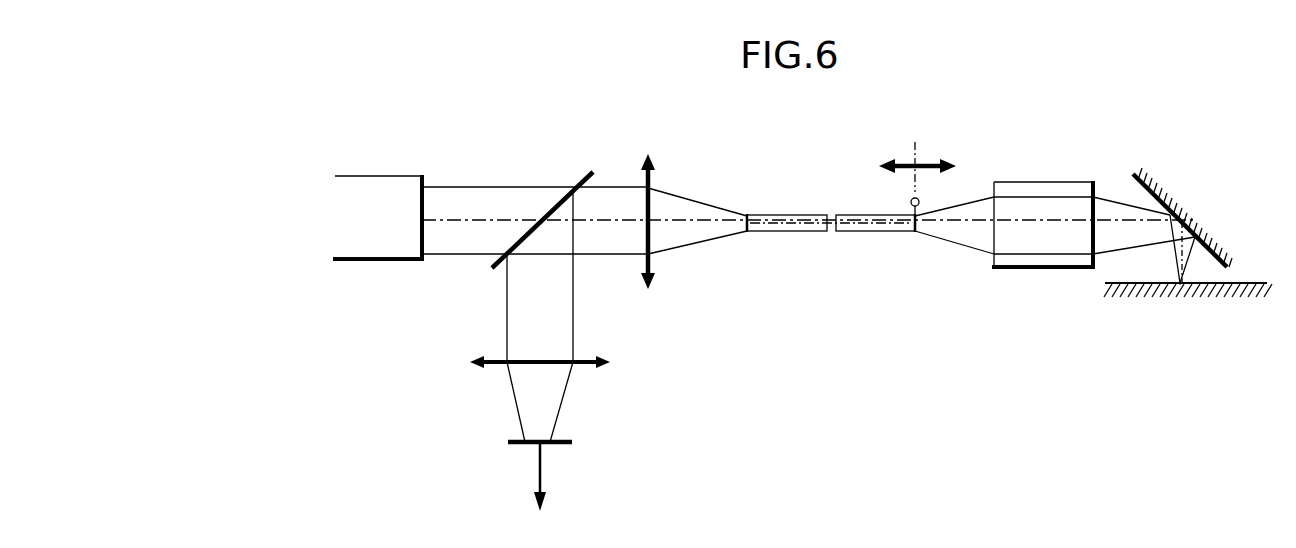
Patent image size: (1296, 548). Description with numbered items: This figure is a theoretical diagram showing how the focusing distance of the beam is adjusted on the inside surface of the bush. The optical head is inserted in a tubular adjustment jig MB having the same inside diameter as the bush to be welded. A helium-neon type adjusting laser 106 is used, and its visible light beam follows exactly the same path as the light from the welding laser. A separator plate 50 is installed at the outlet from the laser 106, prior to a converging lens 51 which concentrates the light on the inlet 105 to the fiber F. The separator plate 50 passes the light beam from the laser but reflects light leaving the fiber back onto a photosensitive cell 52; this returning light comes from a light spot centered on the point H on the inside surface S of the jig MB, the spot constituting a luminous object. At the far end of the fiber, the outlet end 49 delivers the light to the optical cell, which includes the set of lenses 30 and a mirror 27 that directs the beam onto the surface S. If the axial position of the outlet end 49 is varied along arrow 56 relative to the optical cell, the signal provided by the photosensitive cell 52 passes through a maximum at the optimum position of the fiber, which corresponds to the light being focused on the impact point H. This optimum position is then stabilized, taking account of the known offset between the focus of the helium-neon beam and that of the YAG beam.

The adjusting laser 106 is at (373, 192).
The separator plate 50 is at (580, 180).
The converging lens 51 is at (652, 184).
The fiber F is at (786, 218).
The inlet 105 is at (746, 232).
The arrow 56 is at (903, 165).
The outlet end 49 is at (917, 232).
The set of lenses 30 is at (1040, 188).
The mirror 27 is at (1134, 178).
The tubular adjustment jig MB is at (1106, 286).
The point H is at (1178, 282).
The inside surface S is at (1252, 283).
The photosensitive cell 52 is at (518, 440).